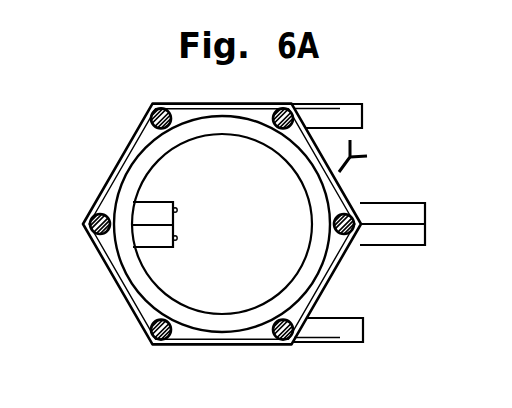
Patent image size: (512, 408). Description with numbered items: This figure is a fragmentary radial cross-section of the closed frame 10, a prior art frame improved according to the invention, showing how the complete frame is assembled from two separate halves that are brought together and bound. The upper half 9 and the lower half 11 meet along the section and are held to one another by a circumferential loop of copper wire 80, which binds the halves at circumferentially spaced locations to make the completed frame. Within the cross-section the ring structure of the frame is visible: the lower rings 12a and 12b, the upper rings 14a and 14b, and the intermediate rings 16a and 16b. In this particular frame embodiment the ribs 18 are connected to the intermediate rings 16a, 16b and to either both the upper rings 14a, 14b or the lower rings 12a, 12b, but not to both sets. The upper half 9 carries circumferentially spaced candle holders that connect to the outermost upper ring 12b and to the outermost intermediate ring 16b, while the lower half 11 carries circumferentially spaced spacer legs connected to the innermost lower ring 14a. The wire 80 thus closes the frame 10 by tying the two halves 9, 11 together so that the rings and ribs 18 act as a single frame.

The closed frame 10 is at (102, 145).
The upper half 9 is at (140, 168).
The lower half 11 is at (143, 285).
The ribs 18 is at (222, 224).
The lower ring 12a is at (363, 109).
The outermost upper ring 12b is at (165, 108).
The innermost lower ring 14a is at (365, 330).
The upper ring 14b is at (156, 345).
The intermediate ring 16a is at (425, 208).
The outermost intermediate ring 16b is at (178, 211).
The copper wire 80 is at (353, 188).